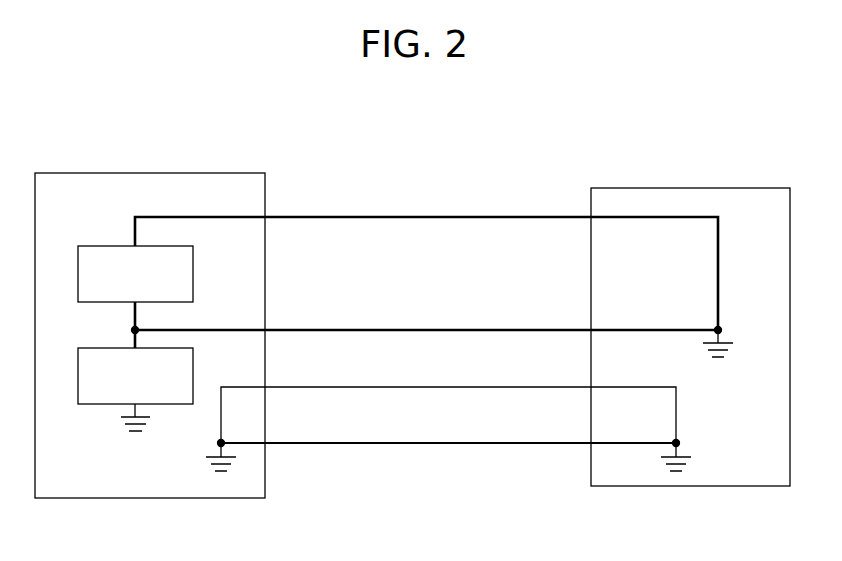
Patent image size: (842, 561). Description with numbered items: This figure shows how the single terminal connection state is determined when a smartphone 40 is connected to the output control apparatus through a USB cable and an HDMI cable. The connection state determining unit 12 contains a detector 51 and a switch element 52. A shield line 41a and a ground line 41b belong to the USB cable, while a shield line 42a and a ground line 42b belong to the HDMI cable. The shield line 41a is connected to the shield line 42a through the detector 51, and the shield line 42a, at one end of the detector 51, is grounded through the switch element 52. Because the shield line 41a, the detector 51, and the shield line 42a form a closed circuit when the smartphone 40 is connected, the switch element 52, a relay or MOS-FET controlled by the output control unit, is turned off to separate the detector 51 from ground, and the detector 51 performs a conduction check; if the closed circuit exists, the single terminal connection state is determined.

The connection state determining unit 12 is at (152, 173).
The smartphone 40 is at (687, 188).
The detector 51 is at (193, 268).
The switch element 52 is at (193, 371).
The shield line 41a is at (382, 217).
The shield line 42a is at (382, 330).
The ground line 41b is at (382, 387).
The ground line 42b is at (382, 443).